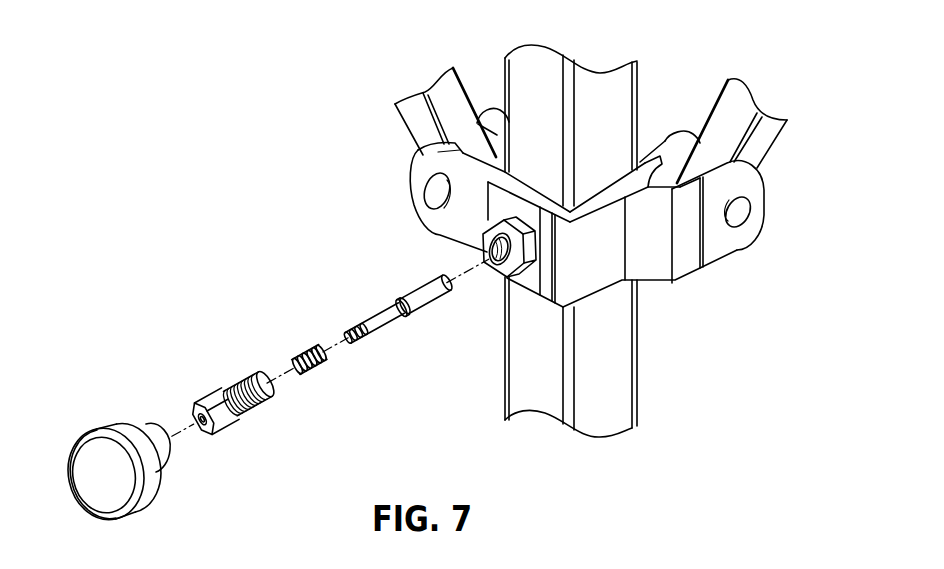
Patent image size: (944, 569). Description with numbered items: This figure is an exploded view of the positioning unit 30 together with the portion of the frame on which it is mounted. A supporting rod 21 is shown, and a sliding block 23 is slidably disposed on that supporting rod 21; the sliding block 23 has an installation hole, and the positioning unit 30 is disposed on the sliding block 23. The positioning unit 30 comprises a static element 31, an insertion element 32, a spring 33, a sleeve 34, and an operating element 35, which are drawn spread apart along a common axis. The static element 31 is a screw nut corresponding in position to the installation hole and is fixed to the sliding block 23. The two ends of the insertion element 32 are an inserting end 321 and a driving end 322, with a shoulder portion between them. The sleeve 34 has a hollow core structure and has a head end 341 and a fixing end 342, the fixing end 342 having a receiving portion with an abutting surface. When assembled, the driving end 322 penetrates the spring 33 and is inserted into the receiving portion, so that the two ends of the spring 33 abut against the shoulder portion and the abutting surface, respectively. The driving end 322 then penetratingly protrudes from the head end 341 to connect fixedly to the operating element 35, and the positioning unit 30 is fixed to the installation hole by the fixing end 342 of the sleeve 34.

The supporting rod 21 is at (620, 400).
The sliding block 23 is at (715, 245).
The positioning unit 30 is at (252, 280).
The static element 31 is at (496, 278).
The insertion element 32 is at (397, 310).
The inserting end 321 is at (424, 295).
The driving end 322 is at (373, 323).
The spring 33 is at (309, 359).
The sleeve 34 is at (233, 401).
The head end 341 is at (213, 413).
The fixing end 342 is at (248, 393).
The operating element 35 is at (120, 425).